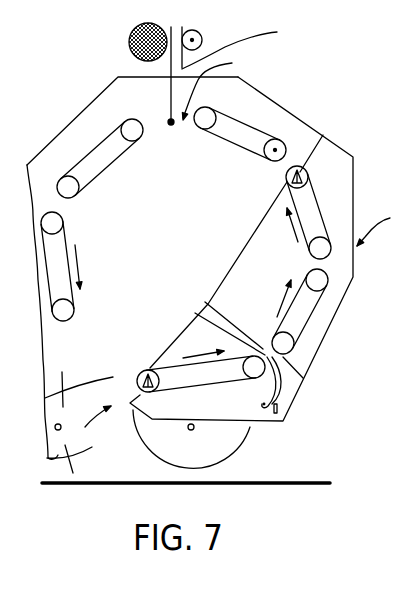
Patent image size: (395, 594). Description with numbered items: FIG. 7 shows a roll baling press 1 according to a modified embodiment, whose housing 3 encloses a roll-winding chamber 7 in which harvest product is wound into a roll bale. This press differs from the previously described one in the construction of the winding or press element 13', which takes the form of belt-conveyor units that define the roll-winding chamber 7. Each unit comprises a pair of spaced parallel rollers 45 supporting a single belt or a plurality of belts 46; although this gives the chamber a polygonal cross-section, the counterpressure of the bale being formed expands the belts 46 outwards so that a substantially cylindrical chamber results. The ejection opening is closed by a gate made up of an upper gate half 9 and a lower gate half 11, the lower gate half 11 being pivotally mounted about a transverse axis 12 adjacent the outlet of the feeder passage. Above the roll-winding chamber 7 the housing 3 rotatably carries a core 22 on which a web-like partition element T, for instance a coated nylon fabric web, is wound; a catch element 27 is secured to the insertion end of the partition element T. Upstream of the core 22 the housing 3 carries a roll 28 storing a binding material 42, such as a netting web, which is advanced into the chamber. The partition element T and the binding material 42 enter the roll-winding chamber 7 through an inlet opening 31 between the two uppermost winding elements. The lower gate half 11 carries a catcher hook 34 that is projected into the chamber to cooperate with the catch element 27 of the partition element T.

The roll baling press 1 is at (321, 130).
The housing 3 is at (64, 130).
The roll-winding chamber 7 is at (242, 175).
The upper gate half 9 is at (333, 175).
The lower gate half 11 is at (242, 398).
The transverse axis 12 is at (148, 370).
The winding or press element 13' is at (115, 169).
The core 22 is at (129, 50).
The catch element 27 is at (176, 125).
The roll 28 is at (200, 32).
The inlet opening 31 is at (219, 87).
The catcher hook 34 is at (305, 392).
The binding material 42 is at (244, 44).
The rollers 45 is at (134, 138).
The belts 46 is at (97, 145).
The partition element T is at (171, 120).